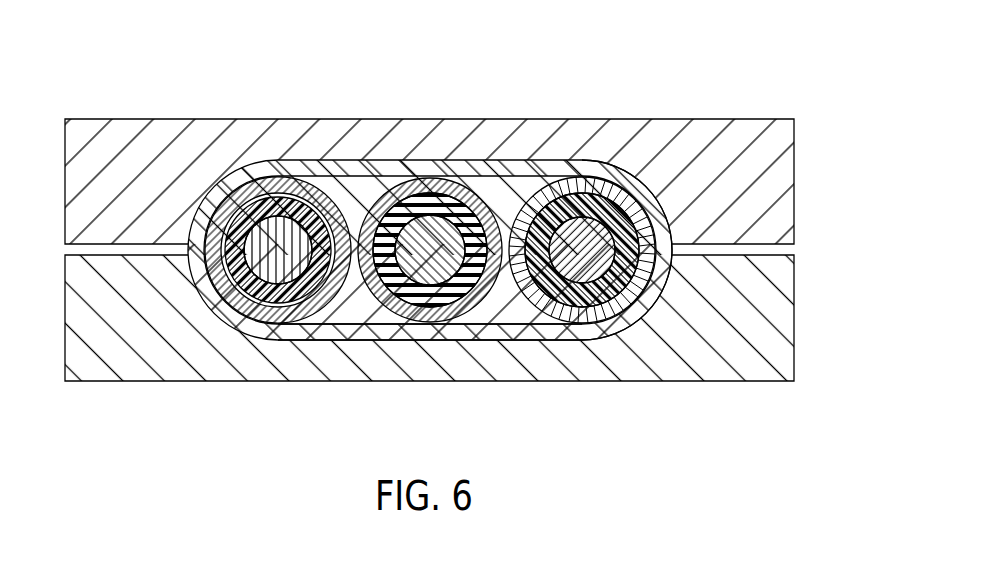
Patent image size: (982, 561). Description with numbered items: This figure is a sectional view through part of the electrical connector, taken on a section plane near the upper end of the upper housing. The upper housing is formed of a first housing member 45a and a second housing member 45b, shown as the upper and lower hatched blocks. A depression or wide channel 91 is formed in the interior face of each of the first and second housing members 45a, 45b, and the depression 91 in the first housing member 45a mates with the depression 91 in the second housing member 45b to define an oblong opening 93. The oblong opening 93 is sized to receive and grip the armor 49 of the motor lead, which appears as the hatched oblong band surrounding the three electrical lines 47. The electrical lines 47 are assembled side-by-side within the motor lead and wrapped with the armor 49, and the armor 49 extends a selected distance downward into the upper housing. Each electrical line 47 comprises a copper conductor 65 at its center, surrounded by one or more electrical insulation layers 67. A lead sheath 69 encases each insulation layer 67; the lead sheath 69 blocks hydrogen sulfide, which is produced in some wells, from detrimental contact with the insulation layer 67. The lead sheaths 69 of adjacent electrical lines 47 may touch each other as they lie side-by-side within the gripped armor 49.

The first housing member 45a is at (780, 320).
The second housing member 45b is at (780, 178).
The electrical line 47 is at (338, 198).
The armor 49 is at (497, 167).
The copper conductor 65 is at (232, 253).
The electrical insulation layer 67 is at (225, 292).
The lead sheath 69 is at (299, 312).
The depression 91 is at (483, 332).
The oblong opening 93 is at (666, 290).